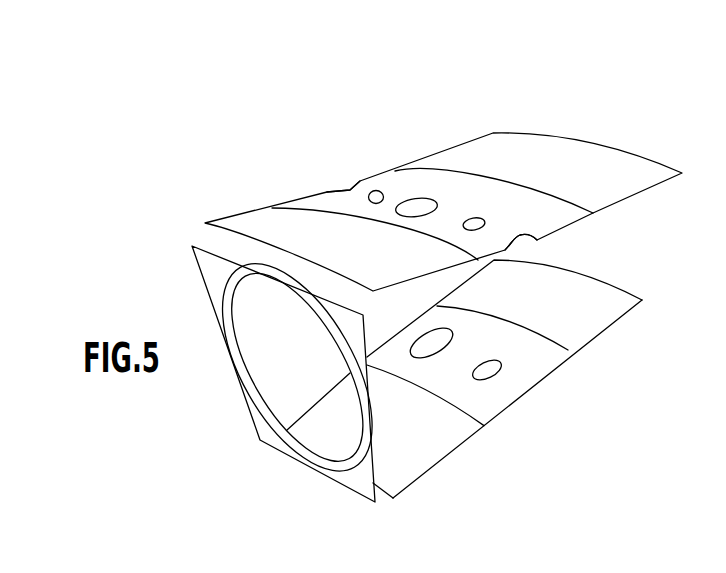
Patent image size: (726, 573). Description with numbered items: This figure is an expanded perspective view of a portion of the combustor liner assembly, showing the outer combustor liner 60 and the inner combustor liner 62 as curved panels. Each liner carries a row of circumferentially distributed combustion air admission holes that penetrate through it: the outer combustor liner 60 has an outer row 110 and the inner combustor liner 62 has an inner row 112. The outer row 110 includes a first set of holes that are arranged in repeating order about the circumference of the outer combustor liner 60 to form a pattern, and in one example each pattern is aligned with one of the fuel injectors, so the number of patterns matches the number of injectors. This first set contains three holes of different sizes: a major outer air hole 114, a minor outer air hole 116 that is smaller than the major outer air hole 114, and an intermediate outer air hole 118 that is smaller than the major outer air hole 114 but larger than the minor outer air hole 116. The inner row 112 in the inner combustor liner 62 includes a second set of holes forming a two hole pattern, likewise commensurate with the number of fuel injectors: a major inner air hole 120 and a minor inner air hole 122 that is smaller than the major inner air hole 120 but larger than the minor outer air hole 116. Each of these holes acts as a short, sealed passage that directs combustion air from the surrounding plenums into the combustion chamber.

The outer row 110 is at (329, 112).
The outer combustor liner 60 is at (516, 142).
The inner combustor liner 62 is at (591, 330).
The inner row 112 is at (518, 400).
The major outer air hole 114 is at (424, 200).
The minor outer air hole 116 is at (375, 191).
The intermediate outer air hole 118 is at (350, 188).
The major inner air hole 120 is at (440, 355).
The minor inner air hole 122 is at (502, 368).